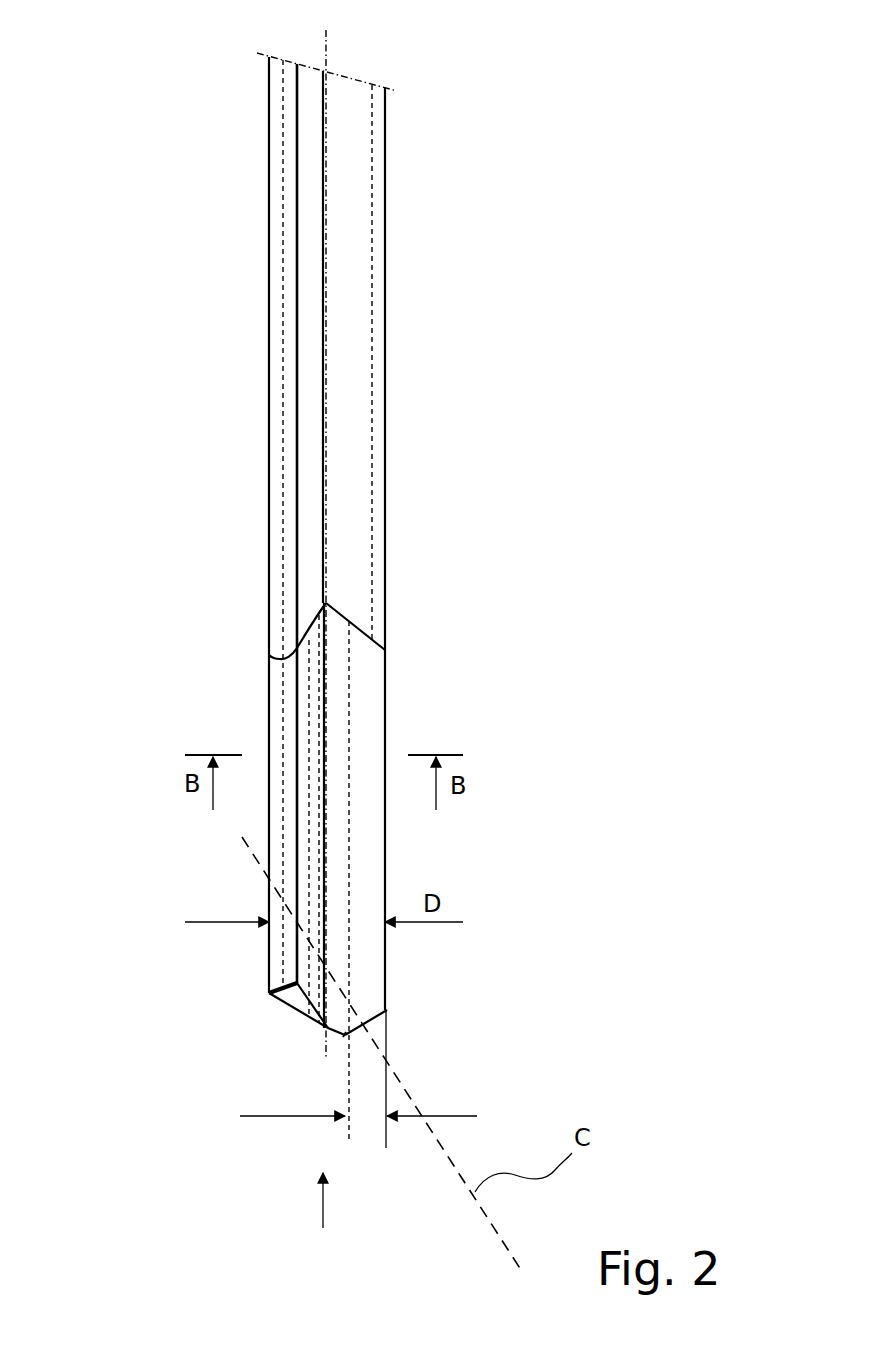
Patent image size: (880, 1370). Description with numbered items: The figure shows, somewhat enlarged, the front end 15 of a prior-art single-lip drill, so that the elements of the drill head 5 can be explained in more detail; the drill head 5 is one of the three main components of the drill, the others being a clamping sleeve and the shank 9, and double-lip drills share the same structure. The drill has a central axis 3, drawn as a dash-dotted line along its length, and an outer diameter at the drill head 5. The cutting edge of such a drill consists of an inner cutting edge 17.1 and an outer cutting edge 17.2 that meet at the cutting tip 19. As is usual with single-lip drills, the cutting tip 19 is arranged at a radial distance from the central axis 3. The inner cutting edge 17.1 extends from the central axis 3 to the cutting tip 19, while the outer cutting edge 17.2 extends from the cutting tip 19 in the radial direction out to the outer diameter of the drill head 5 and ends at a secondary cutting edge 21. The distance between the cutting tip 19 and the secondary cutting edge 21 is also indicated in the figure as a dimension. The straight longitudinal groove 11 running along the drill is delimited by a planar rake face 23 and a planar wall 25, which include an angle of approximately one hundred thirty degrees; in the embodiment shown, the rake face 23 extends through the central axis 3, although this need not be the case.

The central axis 3 is at (326, 62).
The drill head 5 is at (487, 672).
The shank 9 is at (487, 310).
The longitudinal groove 11 is at (352, 462).
The front end 15 is at (247, 1150).
The inner cutting edge 17.1 is at (328, 1032).
The outer cutting edge 17.2 is at (385, 1012).
The cutting tip 19 is at (343, 1037).
The secondary cutting edge 21 is at (387, 967).
The rake face 23 is at (370, 873).
The wall 25 is at (300, 977).